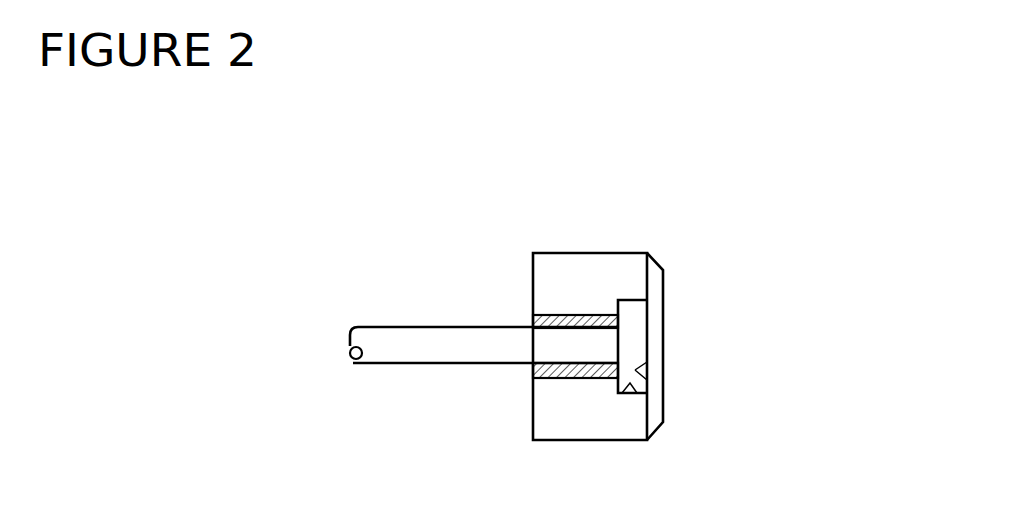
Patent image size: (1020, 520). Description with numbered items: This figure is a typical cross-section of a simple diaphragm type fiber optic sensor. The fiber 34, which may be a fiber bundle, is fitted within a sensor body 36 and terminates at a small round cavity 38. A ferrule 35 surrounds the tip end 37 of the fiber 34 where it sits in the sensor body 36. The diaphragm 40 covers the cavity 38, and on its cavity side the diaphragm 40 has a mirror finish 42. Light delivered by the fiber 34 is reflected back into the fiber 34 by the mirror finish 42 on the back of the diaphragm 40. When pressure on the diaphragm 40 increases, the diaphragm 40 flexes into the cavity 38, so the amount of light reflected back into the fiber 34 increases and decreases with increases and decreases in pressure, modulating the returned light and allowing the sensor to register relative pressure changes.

The fiber 34 is at (460, 352).
The ferrule 35 is at (537, 313).
The sensor body 36 is at (575, 278).
The tip end 37 is at (620, 343).
The cavity 38 is at (630, 383).
The diaphragm 40 is at (657, 412).
The mirror finish 42 is at (635, 370).